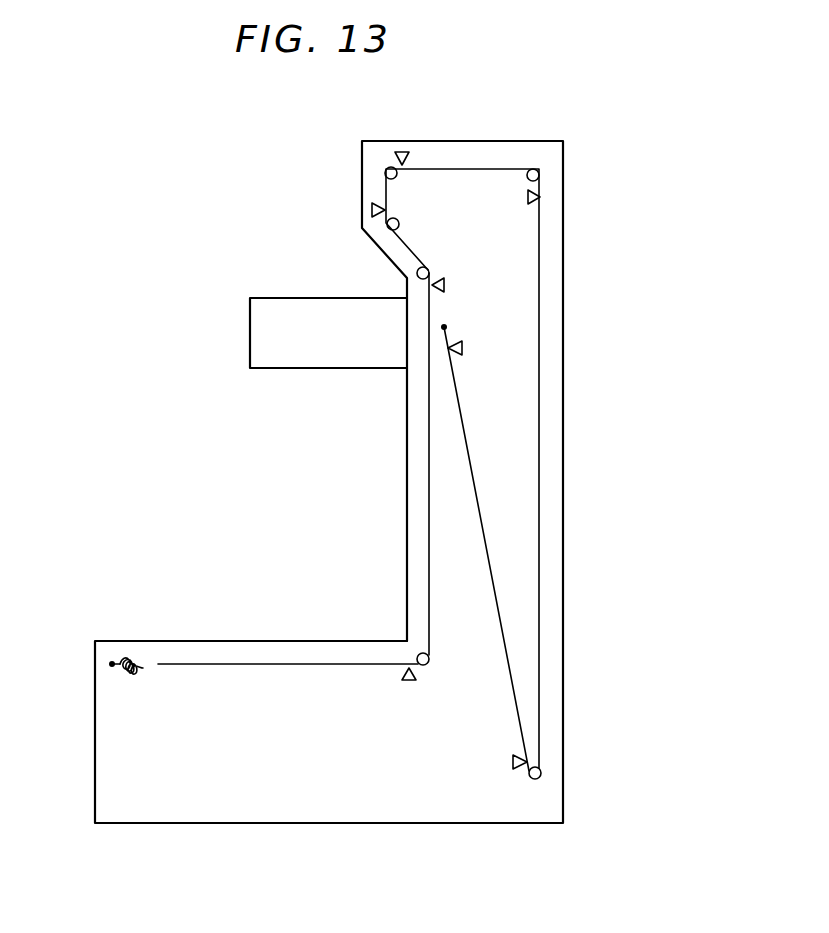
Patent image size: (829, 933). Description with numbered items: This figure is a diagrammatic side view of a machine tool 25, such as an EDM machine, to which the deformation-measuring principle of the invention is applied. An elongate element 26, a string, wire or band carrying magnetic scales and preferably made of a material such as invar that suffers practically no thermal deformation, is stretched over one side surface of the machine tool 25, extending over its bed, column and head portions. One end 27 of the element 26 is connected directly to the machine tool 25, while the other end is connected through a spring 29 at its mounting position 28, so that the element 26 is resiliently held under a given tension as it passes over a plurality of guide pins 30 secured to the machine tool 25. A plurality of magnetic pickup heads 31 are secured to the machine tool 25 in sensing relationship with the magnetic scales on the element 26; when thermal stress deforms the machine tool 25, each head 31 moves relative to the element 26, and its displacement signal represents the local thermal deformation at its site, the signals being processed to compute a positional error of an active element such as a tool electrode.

The machine tool 25 is at (300, 824).
The elongate element 26 is at (541, 523).
The end of the element 27 is at (444, 327).
The mounting position 28 is at (112, 664).
The spring 29 is at (140, 658).
The guide pins 30 is at (386, 171).
The magnetic pickup heads 31 is at (403, 152).